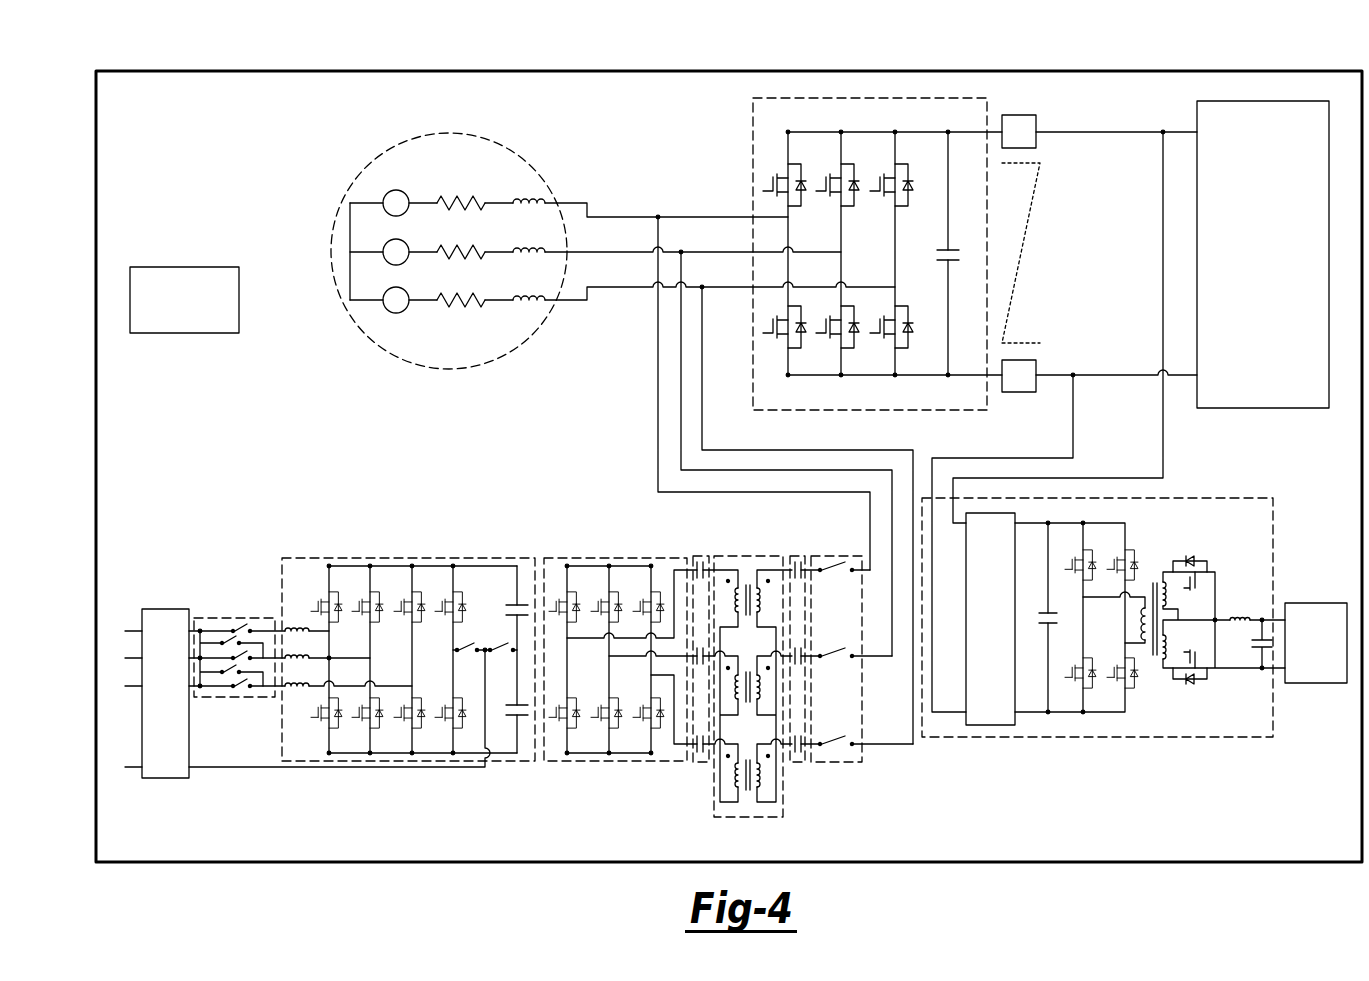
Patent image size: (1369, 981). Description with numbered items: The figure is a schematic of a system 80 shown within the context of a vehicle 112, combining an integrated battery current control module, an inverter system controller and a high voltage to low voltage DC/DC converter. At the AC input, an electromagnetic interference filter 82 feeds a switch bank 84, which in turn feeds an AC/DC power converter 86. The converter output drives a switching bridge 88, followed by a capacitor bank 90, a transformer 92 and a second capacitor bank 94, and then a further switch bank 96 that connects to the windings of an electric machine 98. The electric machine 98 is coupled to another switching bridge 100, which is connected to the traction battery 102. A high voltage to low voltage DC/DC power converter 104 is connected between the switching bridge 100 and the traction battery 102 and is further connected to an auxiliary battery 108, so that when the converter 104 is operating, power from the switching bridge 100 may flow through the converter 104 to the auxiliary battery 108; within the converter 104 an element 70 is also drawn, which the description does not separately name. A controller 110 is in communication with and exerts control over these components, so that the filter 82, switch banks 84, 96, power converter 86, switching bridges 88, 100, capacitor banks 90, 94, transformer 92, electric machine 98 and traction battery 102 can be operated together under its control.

The EMI filter 70 is at (993, 726).
The system 80 is at (207, 133).
The electromagnetic interference filter 82 is at (166, 609).
The switch bank 84 is at (233, 618).
The AC/DC power converter 86 is at (408, 558).
The switching bridge 88 is at (613, 558).
The capacitor bank 90 is at (700, 764).
The transformer 92 is at (748, 818).
The capacitor bank 94 is at (798, 764).
The switch bank 96 is at (836, 764).
The electric machine 98 is at (447, 370).
The switching bridge 100 is at (752, 128).
The traction battery 102 is at (1262, 409).
The high voltage to low voltage DC/DC power converter 104 is at (1103, 655).
The auxiliary battery 108 is at (1318, 603).
The controller 110 is at (183, 267).
The vehicle 112 is at (740, 71).